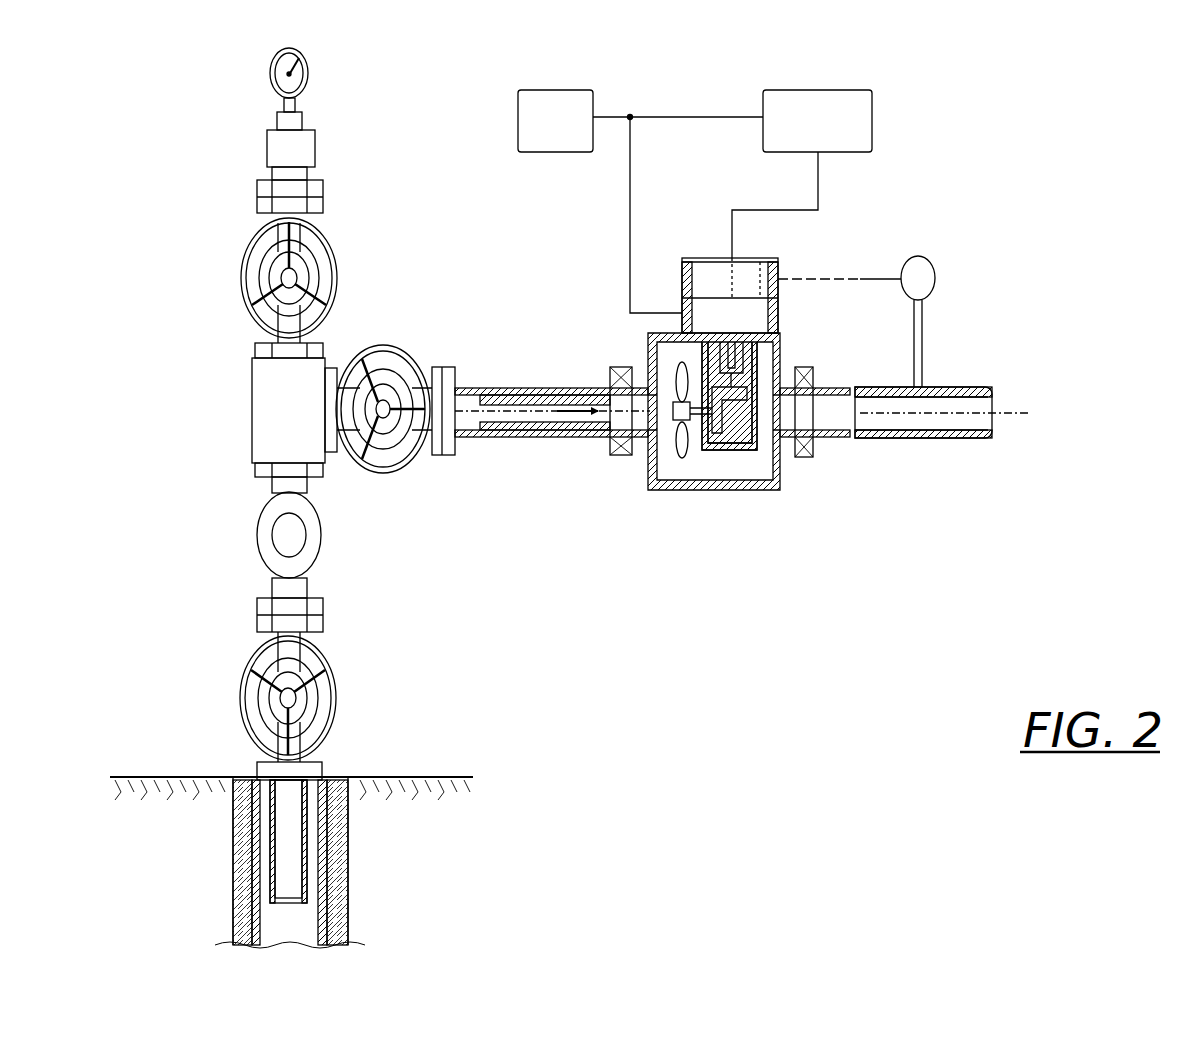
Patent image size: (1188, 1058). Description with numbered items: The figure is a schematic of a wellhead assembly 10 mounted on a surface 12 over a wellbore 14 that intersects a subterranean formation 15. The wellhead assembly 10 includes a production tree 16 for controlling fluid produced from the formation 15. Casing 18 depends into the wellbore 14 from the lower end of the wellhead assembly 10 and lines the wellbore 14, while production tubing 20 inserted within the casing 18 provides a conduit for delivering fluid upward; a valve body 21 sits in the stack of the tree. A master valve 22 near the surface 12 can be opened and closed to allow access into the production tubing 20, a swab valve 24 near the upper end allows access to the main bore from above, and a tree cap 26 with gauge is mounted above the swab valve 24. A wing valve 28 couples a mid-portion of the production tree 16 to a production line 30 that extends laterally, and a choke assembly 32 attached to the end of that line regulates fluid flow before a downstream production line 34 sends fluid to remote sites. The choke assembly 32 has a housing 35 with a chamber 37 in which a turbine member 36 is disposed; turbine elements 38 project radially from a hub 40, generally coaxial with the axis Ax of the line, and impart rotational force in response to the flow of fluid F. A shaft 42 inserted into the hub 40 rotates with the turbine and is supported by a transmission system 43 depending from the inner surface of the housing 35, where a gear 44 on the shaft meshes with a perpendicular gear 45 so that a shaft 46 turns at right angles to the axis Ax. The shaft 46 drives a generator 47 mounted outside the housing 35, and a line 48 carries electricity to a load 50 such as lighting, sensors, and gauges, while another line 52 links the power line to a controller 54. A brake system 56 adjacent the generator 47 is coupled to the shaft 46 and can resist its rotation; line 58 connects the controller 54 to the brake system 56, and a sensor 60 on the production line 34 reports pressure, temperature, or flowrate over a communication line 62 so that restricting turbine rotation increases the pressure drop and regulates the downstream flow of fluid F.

The wellhead assembly 10 is at (232, 113).
The surface 12 is at (426, 775).
The wellbore 14 is at (252, 930).
The subterranean formation 15 is at (340, 930).
The production tree 16 is at (228, 190).
The casing 18 is at (325, 888).
The production tubing 20 is at (310, 840).
The valve body 21 is at (290, 554).
The master valve 22 is at (242, 690).
The swab valve 24 is at (335, 266).
The tree cap 26 is at (330, 120).
The wing valve 28 is at (388, 346).
The production line 30 is at (540, 438).
The choke assembly 32 is at (705, 548).
The production line 34 is at (955, 440).
The housing 35 is at (690, 492).
The turbine member 36 is at (655, 475).
The chamber 37 is at (650, 348).
The turbine elements 38 is at (677, 450).
The hub 40 is at (618, 456).
The shaft 42 is at (698, 440).
The transmission system 43 is at (772, 470).
The gear 44 is at (735, 455).
The gear 45 is at (745, 392).
The shaft 46 is at (740, 352).
The generator 47 is at (685, 290).
The line 48 is at (628, 200).
The load 50 is at (518, 115).
The line 52 is at (692, 112).
The controller 54 is at (872, 126).
The brake system 56 is at (765, 276).
The line 58 is at (820, 190).
The sensor 60 is at (935, 272).
The communication line 62 is at (880, 272).
The flow of fluid F is at (580, 398).
The axis Ax is at (506, 395).